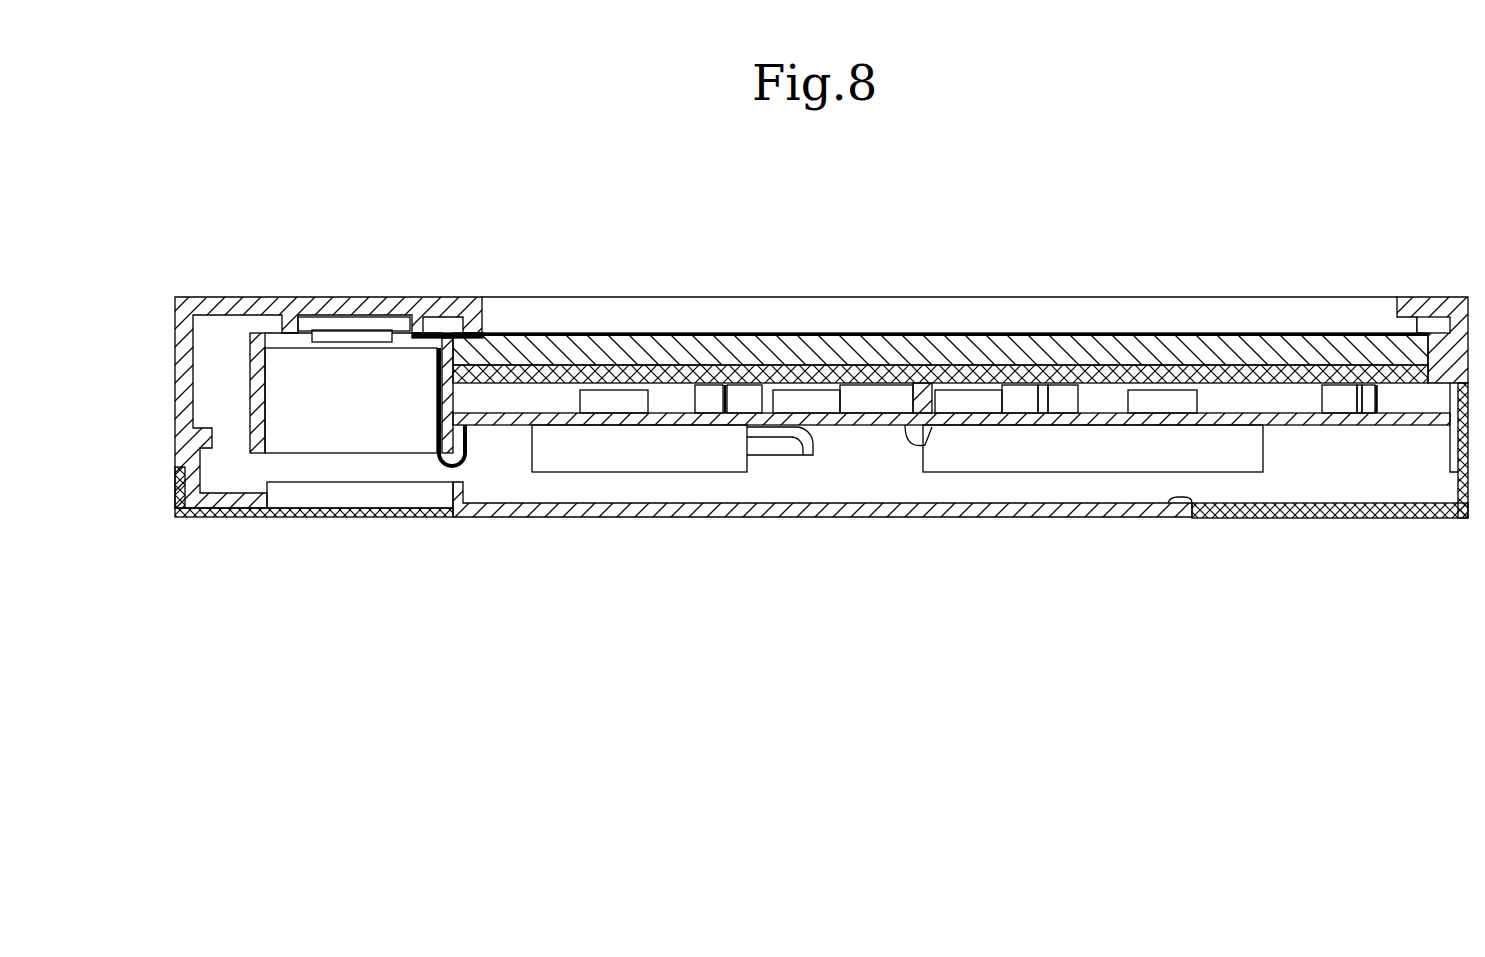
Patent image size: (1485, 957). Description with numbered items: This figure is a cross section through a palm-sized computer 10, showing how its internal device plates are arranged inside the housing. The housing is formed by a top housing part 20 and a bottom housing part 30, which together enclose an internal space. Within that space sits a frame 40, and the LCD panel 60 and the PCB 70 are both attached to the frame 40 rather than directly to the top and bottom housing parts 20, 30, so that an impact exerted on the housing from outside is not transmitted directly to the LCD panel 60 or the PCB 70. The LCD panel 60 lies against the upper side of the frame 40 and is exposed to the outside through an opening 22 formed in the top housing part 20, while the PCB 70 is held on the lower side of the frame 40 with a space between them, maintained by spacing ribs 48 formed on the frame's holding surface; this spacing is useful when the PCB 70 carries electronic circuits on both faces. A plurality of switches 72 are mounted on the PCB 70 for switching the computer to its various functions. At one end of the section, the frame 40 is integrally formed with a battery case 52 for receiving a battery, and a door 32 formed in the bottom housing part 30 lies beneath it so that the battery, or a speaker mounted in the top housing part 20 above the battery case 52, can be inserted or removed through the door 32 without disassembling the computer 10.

The palm-sized computer 10 is at (821, 330).
The top housing part 20 is at (323, 308).
The opening 22 is at (822, 312).
The bottom housing part 30 is at (793, 510).
The door 32 is at (293, 512).
The frame 40 is at (888, 370).
The spacing ribs 48 is at (920, 398).
The battery case 52 is at (405, 362).
The LCD panel 60 is at (1255, 345).
The PCB 70 is at (552, 418).
The switches 72 is at (820, 398).